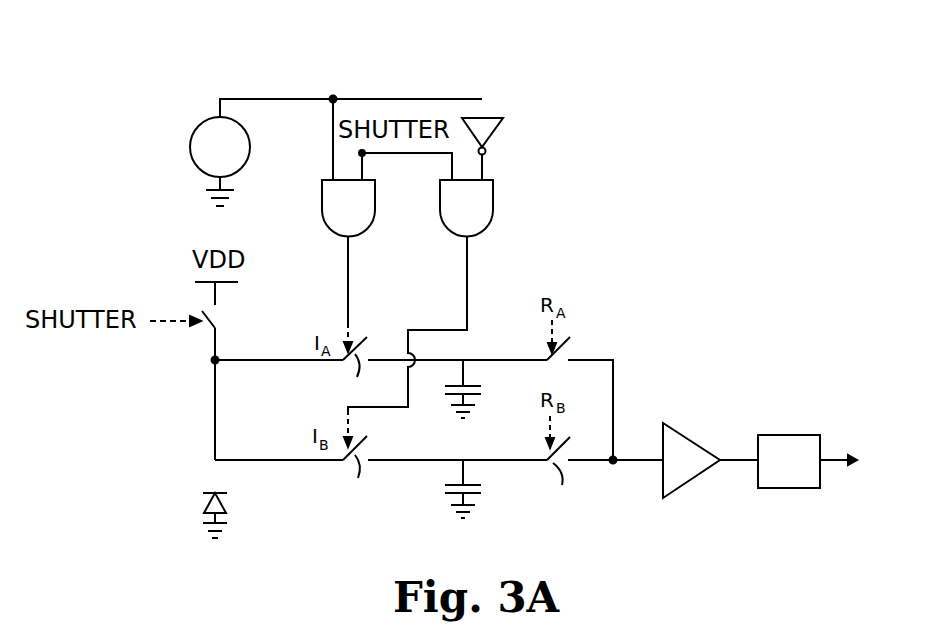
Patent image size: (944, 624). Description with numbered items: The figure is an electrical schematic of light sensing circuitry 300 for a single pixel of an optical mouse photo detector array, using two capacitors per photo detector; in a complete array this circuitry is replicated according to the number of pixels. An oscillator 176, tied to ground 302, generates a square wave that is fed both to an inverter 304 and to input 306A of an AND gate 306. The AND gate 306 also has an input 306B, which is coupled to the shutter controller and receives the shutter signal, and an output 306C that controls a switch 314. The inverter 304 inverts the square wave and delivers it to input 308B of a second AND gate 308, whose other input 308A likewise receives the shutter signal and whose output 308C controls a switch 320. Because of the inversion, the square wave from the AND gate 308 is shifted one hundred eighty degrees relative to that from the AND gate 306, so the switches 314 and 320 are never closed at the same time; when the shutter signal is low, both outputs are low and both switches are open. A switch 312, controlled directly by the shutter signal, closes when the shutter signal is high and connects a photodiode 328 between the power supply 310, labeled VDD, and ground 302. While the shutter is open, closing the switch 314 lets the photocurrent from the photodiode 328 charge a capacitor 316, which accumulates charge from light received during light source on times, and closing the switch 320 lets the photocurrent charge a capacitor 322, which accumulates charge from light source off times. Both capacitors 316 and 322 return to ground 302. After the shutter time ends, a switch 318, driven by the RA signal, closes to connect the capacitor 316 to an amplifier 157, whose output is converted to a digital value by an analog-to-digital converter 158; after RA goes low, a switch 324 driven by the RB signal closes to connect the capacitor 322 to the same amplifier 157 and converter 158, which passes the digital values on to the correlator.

The light sensing circuitry 300 is at (291, 54).
The oscillator 176 is at (199, 128).
The ground 302 is at (213, 206).
The inverter 304 is at (492, 115).
The AND gate 306 is at (364, 230).
The input of AND gate 306A is at (330, 178).
The input of AND gate 306B is at (366, 178).
The output of AND gate 306C is at (344, 239).
The AND gate 308 is at (494, 203).
The input of AND gate 308A is at (446, 181).
The input of AND gate 308B is at (494, 178).
The output of AND gate 308C is at (474, 240).
The power supply 310 is at (195, 282).
The switch 312 is at (204, 333).
The switch 314 is at (359, 368).
The capacitor 316 is at (477, 385).
The switch 318 is at (565, 347).
The switch 320 is at (363, 472).
The capacitor 322 is at (452, 496).
The switch 324 is at (568, 475).
The photodiode 328 is at (205, 503).
The amplifier 157 is at (697, 441).
The analog-to-digital converter 158 is at (790, 435).